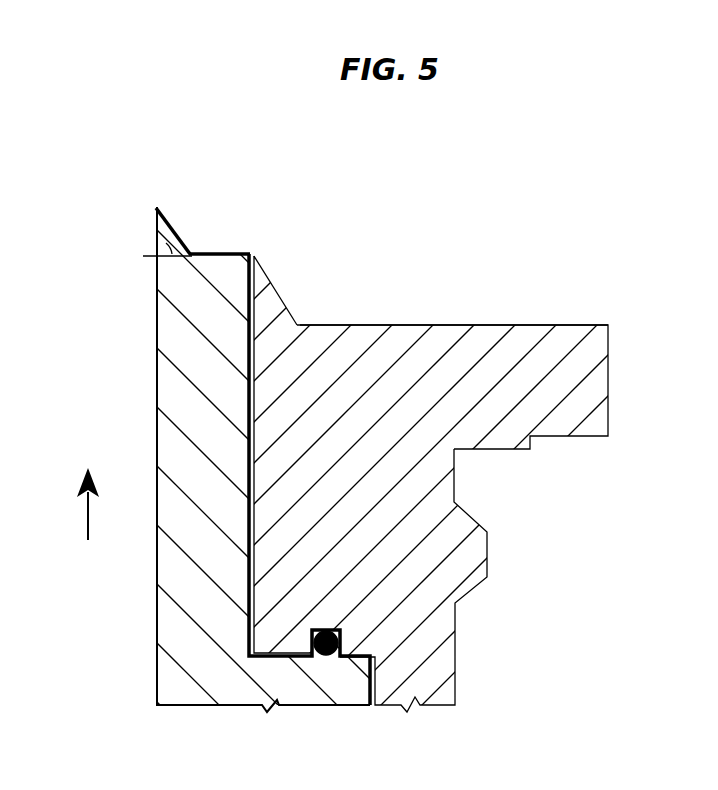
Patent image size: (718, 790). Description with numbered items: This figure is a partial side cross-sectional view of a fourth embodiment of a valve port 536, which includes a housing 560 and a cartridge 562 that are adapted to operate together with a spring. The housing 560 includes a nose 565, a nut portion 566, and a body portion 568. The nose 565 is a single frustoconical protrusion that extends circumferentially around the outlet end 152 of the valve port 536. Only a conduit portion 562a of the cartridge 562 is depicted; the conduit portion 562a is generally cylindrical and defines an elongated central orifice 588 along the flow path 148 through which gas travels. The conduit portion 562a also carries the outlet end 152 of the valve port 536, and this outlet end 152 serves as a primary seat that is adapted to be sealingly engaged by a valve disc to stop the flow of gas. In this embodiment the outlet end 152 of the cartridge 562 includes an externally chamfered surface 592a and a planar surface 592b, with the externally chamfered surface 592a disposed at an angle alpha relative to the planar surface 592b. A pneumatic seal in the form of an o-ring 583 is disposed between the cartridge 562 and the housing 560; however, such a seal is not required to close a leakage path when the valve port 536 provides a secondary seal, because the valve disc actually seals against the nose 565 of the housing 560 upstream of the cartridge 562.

The outlet end 152 is at (155, 209).
The externally chamfered surface 592a is at (188, 252).
The planar surface 592b is at (228, 256).
The angle alpha is at (166, 241).
The nose 565 is at (270, 303).
The nut portion 566 is at (592, 330).
The valve port 536 is at (634, 271).
The elongated central orifice 588 is at (157, 400).
The housing 560 is at (533, 416).
The flow path 148 is at (88, 512).
The conduit portion 562a is at (178, 582).
The cartridge 562 is at (172, 649).
The body portion 568 is at (440, 648).
The o-ring 583 is at (337, 657).